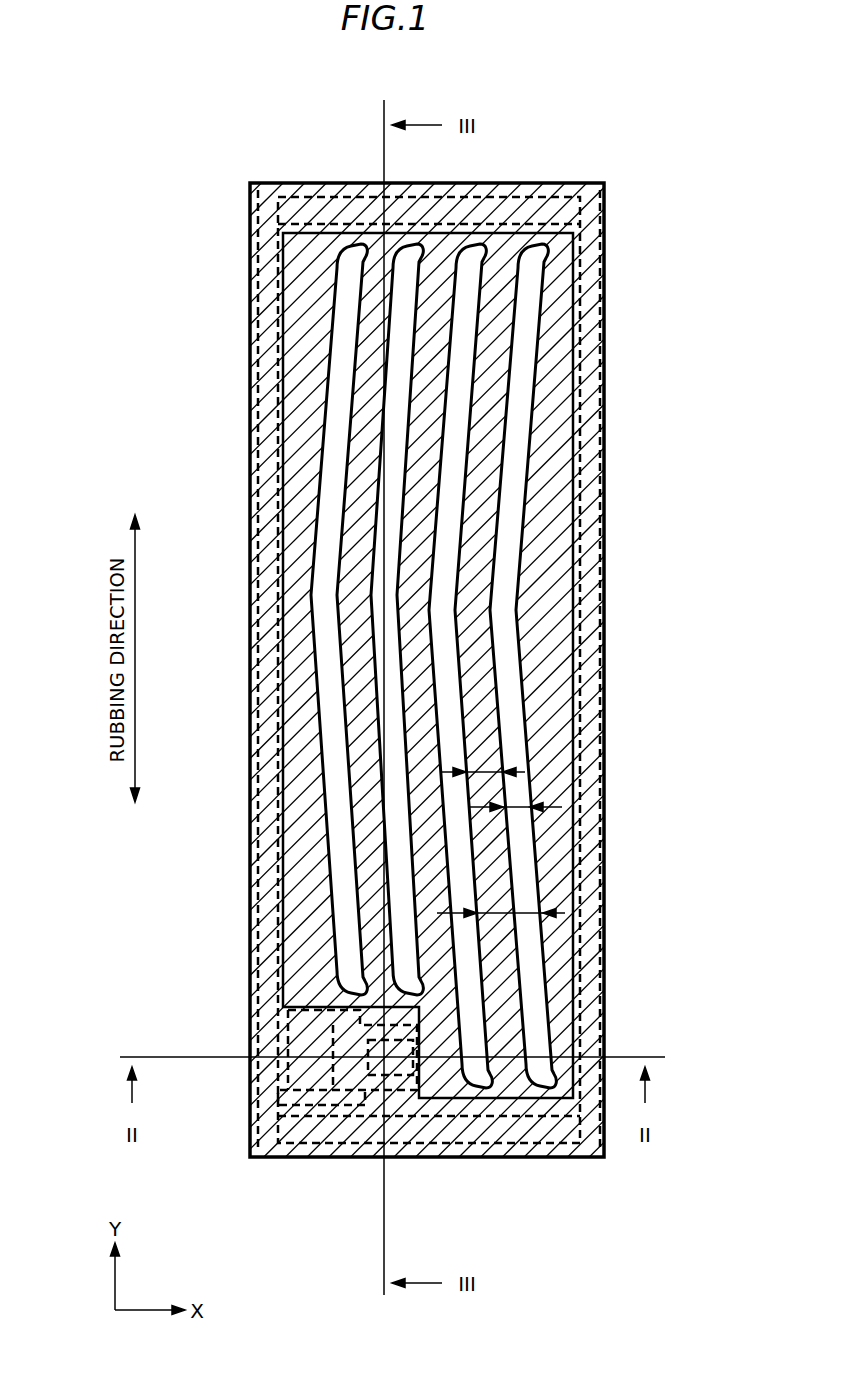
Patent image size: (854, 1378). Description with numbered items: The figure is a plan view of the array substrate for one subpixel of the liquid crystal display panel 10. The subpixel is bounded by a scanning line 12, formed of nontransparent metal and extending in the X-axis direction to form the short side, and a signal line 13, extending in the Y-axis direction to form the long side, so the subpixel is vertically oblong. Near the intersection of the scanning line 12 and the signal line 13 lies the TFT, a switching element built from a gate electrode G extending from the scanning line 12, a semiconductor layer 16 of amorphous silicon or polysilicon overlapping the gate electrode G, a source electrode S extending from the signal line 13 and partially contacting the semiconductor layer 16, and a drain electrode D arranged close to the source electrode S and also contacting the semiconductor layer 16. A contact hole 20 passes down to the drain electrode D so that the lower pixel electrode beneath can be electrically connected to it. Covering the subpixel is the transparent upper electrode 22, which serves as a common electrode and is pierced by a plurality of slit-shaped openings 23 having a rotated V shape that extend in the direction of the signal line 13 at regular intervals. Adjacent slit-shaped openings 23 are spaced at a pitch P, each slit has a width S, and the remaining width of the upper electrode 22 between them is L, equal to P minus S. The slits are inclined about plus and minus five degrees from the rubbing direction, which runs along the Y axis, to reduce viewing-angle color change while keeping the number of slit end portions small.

The liquid crystal display panel 10 is at (73, 104).
The scanning line 12 is at (502, 1127).
The signal line 13 is at (258, 887).
The semiconductor layer 16 is at (328, 1068).
The contact hole 20 is at (393, 1063).
The upper electrode 22 is at (300, 770).
The slit-shaped openings 23 is at (332, 696).
The thin film transistor TFT is at (320, 1040).
The source electrode S is at (303, 1063).
The gate electrode G is at (330, 1112).
The drain electrode D is at (338, 1065).
The upper electrode width L is at (480, 770).
The pitch P is at (505, 911).